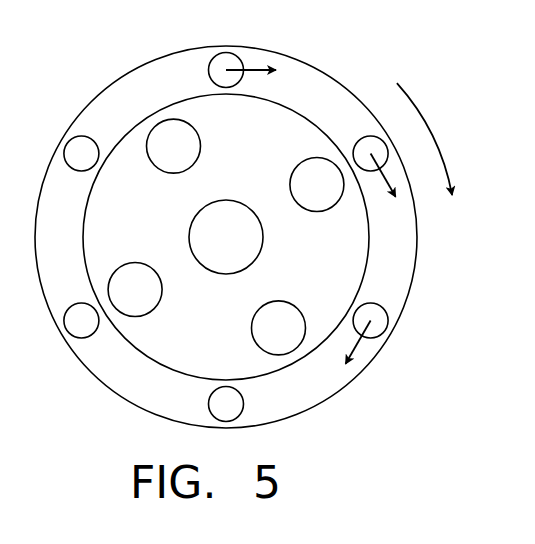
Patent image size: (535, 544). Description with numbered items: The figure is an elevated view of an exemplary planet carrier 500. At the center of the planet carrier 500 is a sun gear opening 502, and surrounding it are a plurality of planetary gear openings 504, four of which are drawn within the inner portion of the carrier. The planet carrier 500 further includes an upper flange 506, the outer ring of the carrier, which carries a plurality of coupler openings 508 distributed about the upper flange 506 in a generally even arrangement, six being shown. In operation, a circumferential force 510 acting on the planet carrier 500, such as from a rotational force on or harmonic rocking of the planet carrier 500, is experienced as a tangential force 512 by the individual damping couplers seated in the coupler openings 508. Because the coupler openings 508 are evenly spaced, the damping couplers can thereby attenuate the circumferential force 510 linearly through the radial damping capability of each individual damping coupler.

The planet carrier 500 is at (398, 62).
The sun gear opening 502 is at (262, 239).
The planetary gear openings 504 is at (194, 129).
The upper flange 506 is at (120, 396).
The coupler openings 508 is at (243, 402).
The circumferential force 510 is at (432, 127).
The tangential force 512 is at (259, 64).